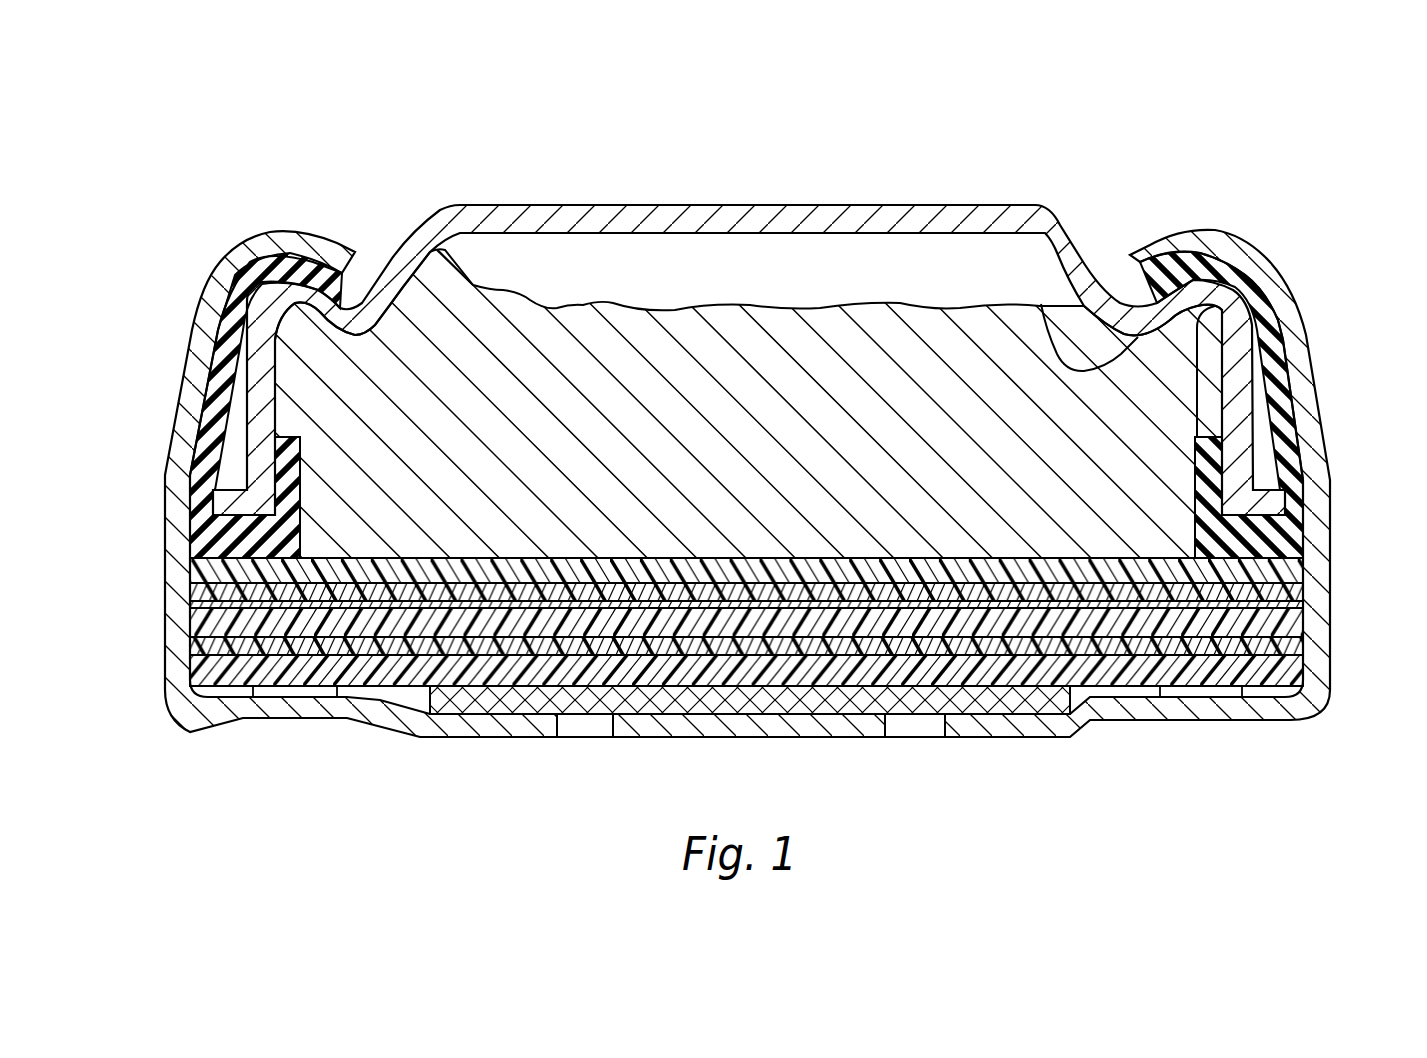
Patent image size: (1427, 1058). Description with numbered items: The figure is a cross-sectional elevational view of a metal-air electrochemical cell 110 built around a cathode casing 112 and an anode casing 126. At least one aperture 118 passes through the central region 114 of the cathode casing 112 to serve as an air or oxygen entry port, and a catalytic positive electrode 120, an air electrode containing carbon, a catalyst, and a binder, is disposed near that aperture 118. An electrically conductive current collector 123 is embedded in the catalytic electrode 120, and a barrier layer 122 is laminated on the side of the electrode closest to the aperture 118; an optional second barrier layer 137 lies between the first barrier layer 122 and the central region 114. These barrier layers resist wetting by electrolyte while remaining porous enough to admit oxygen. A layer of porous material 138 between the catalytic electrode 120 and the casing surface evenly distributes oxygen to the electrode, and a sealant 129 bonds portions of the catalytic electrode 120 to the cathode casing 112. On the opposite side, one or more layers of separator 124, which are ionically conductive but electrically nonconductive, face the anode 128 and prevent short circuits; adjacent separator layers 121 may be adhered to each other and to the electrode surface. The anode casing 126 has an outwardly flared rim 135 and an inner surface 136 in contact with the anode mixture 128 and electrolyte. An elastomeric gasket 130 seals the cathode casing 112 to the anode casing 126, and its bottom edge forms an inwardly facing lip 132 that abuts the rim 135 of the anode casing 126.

The cell 110 is at (328, 170).
The cathode casing 112 is at (188, 337).
The central region 114 is at (485, 737).
The aperture 118 is at (586, 737).
The catalytic positive electrode 120 is at (1300, 622).
The separator 121 is at (190, 597).
The barrier layer 122 is at (1305, 643).
The current collector 123 is at (190, 604).
The separator 124 is at (190, 572).
The anode casing 126 is at (590, 208).
The anode 128 is at (676, 314).
The sealant 129 is at (292, 697).
The gasket 130 is at (1290, 410).
The inwardly facing lip 132 is at (300, 450).
The rim 135 is at (220, 507).
The inner surface 136 is at (1041, 304).
The second barrier layer 137 is at (1303, 662).
The porous material 138 is at (828, 714).